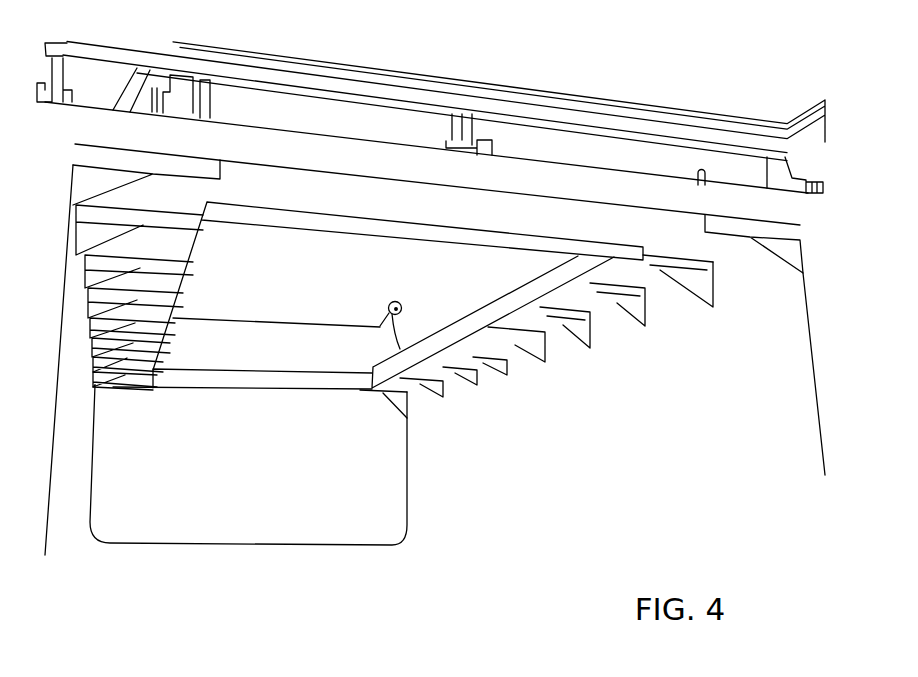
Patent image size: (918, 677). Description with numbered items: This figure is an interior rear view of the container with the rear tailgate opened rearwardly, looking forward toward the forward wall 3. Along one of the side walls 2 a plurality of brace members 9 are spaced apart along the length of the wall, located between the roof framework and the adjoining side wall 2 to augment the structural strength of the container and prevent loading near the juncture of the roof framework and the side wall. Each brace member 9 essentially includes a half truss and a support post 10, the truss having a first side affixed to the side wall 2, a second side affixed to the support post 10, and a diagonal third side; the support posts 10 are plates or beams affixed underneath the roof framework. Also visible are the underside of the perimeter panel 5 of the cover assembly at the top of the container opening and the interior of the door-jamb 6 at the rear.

The side wall 2 is at (562, 458).
The forward wall 3 is at (293, 405).
The perimeter panel 5 is at (658, 233).
The door-jamb 6 is at (513, 303).
The brace members 9 is at (578, 333).
The support posts 10 is at (653, 266).